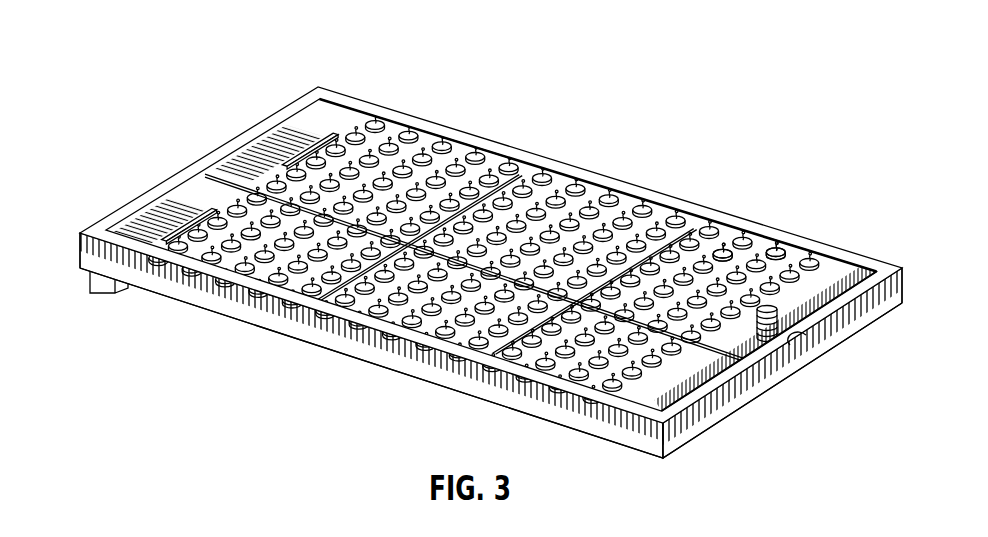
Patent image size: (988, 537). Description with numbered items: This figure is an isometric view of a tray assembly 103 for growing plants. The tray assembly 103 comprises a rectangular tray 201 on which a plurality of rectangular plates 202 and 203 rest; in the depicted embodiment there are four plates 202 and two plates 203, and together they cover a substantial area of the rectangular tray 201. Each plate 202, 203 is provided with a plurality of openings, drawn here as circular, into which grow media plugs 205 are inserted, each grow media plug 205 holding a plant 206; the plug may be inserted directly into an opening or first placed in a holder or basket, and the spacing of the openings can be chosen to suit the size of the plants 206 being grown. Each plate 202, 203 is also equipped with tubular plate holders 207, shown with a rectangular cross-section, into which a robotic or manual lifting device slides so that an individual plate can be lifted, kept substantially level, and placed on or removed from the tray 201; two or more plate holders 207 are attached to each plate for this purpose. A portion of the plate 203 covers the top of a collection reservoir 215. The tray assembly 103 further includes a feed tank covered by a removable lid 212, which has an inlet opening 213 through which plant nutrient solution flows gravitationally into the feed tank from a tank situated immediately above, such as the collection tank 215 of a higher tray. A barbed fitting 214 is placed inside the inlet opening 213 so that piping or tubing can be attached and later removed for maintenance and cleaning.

The tray assembly 103 is at (175, 44).
The rectangular tray 201 is at (345, 342).
The rectangular plate 202 is at (541, 196).
The rectangular plate 203 is at (165, 212).
The grow media plug 205 is at (770, 250).
The plant 206 is at (725, 250).
The tubular plate holder 207 is at (296, 150).
The removable lid 212 is at (866, 277).
The inlet opening 213 is at (778, 345).
The fitting 214 is at (797, 338).
The collection reservoir 215 is at (94, 286).